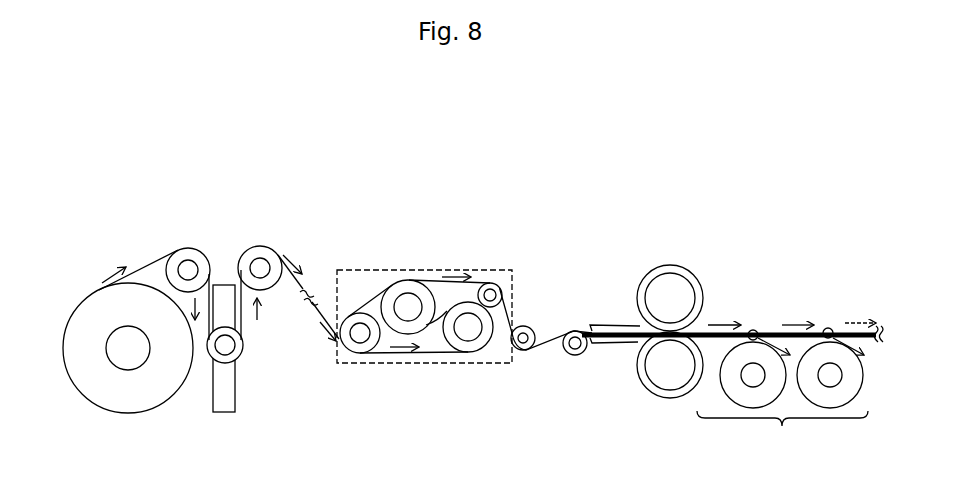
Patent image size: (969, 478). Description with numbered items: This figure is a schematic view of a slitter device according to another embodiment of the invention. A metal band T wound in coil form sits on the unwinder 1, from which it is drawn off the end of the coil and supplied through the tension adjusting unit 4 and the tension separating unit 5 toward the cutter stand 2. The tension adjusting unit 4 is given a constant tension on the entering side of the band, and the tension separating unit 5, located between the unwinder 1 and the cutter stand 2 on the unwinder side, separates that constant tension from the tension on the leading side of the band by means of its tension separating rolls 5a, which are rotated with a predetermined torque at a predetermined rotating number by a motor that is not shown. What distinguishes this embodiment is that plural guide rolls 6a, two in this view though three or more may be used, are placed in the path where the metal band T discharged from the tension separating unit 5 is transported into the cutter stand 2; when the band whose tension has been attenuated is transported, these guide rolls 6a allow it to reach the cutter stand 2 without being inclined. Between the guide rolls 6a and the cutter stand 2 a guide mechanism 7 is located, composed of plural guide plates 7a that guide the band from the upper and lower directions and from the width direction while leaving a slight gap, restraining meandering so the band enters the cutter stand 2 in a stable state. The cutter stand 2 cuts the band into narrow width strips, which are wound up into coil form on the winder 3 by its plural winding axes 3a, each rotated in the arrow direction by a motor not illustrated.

The unwinder 1 is at (93, 411).
The metal band T is at (140, 266).
The tension adjusting unit 4 is at (243, 411).
The tension separating unit 5 is at (421, 380).
The tension separating roll 5a is at (405, 305).
The guide rolls 6a is at (573, 331).
The guide mechanism 7 is at (613, 306).
The guide plate 7a is at (603, 343).
The cutter stand 2 is at (689, 252).
The winding axes 3a is at (752, 376).
The winder 3 is at (782, 436).